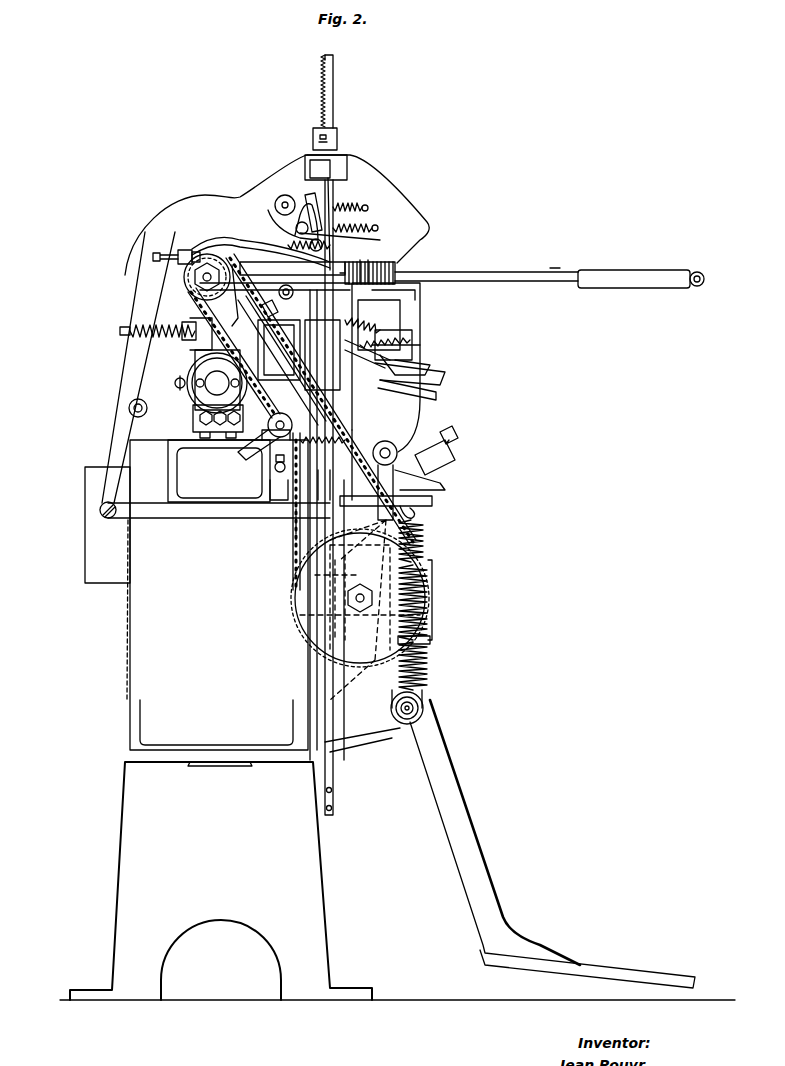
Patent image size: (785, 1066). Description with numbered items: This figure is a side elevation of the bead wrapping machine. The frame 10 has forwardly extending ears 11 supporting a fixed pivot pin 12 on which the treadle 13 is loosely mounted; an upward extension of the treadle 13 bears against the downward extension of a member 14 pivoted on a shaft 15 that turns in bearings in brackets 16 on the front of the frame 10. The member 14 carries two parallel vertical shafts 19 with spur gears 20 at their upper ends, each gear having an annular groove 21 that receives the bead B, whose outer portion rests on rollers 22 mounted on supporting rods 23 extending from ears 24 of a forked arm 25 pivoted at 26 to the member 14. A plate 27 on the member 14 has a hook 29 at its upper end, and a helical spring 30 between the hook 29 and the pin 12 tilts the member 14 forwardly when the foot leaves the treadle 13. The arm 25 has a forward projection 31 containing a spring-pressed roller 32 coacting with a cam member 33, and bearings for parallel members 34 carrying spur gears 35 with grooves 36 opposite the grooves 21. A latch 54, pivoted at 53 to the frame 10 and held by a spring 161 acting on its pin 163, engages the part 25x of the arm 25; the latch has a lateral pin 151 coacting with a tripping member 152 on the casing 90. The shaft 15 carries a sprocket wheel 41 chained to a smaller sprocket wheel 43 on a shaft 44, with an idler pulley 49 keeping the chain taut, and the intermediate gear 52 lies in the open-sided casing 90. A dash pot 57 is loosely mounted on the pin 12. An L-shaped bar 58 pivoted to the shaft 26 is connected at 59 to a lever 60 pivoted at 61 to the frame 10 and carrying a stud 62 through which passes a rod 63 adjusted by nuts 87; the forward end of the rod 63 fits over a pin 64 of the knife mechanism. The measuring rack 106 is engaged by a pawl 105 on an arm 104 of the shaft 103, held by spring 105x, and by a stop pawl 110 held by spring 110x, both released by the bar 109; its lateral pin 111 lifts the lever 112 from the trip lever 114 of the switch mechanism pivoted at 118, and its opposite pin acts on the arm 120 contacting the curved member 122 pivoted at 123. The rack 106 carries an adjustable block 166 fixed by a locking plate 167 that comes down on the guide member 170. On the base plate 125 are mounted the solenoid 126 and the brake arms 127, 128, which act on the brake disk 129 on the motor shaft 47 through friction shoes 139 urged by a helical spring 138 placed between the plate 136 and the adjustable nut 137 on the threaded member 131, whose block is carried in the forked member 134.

The frame 10 is at (124, 835).
The forwardly extending ears 11 is at (368, 735).
The fixed pivot pin 12 is at (424, 706).
The treadle 13 is at (482, 868).
The member 14 is at (384, 440).
The shaft 15 is at (330, 612).
The brackets 16 is at (433, 617).
The parallel vertical shafts 19 is at (426, 362).
The spur gears 20 is at (350, 262).
The annular groove 21 is at (370, 260).
The rollers 22 is at (634, 289).
The supporting rods 23 is at (532, 284).
The ears 24 is at (421, 296).
The forked arm or frame 25 is at (420, 333).
The part of the arm 25x is at (446, 374).
The pivot 26 is at (393, 449).
The plate 27 is at (428, 564).
The hook 29 is at (420, 512).
The helical spring 30 is at (426, 546).
The forward projection 31 is at (456, 462).
The spring-pressed roller 32 is at (446, 488).
The cam member 33 is at (434, 500).
The parallel members 34 is at (412, 325).
The spur gears 35 is at (396, 274).
The annular groove 36 is at (396, 266).
The sprocket wheel 41 is at (292, 552).
The smaller sprocket wheel 43 is at (276, 360).
The shaft 44 is at (200, 278).
The motor shaft 47 is at (205, 388).
The idler pulley 49 is at (262, 440).
The intermediate gear 52 is at (296, 535).
The pivot 53 is at (370, 359).
The latch 54 is at (438, 397).
The dash pot 57 is at (432, 665).
The L-shaped bar 58 is at (204, 518).
The pivot 59 is at (100, 511).
The lever 60 is at (116, 446).
The pivot 61 is at (129, 409).
The pivoted stud 62 is at (182, 250).
The rod 63 is at (240, 240).
The pin 64 is at (288, 246).
The nuts 87 is at (197, 250).
The open sided casing 90 is at (170, 206).
The shaft 103 is at (278, 220).
The arm 104 is at (288, 197).
The pivoted pawl 105 is at (395, 228).
The spring 105x is at (375, 222).
The measuring rack 106 is at (334, 92).
The parallel bar 109 is at (334, 188).
The stop pawl 110 is at (310, 200).
The spring 110x is at (364, 203).
The lateral pin 111 is at (305, 795).
The lever 112 is at (323, 485).
The trip lever 114 is at (283, 488).
The pivot 118 is at (274, 462).
The arm 120 is at (291, 438).
The curved member 122 is at (276, 312).
The pivot 123 is at (275, 298).
The base plate 125 is at (92, 555).
The solenoid 126 is at (250, 430).
The brake arm 127 is at (190, 410).
The brake arm 128 is at (279, 358).
The brake disk 129 is at (190, 360).
The threaded member 131 is at (120, 331).
The forked member 134 is at (217, 380).
The plate 136 is at (232, 300).
The adjustable nut 137 is at (182, 330).
The helical spring 138 is at (195, 318).
The friction pad or shoe 139 is at (193, 375).
The lateral pin 151 is at (310, 366).
The tripping member 152 is at (378, 338).
The spring 161 is at (362, 315).
The upwardly extending pin 163 is at (432, 346).
The block 166 is at (339, 140).
The locking plate 167 is at (313, 137).
The guide member 170 is at (305, 168).
The bead B is at (550, 268).